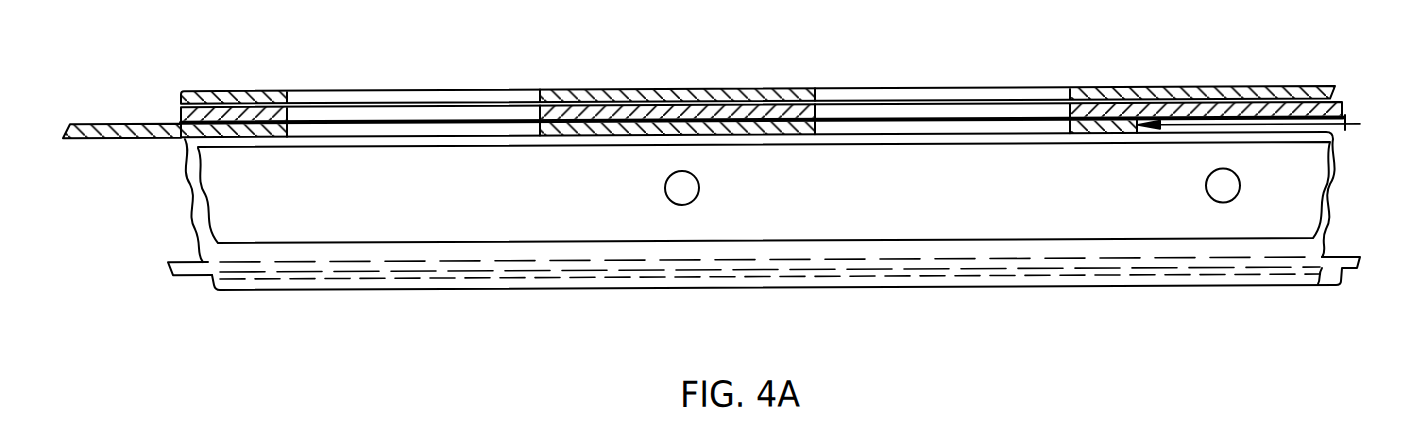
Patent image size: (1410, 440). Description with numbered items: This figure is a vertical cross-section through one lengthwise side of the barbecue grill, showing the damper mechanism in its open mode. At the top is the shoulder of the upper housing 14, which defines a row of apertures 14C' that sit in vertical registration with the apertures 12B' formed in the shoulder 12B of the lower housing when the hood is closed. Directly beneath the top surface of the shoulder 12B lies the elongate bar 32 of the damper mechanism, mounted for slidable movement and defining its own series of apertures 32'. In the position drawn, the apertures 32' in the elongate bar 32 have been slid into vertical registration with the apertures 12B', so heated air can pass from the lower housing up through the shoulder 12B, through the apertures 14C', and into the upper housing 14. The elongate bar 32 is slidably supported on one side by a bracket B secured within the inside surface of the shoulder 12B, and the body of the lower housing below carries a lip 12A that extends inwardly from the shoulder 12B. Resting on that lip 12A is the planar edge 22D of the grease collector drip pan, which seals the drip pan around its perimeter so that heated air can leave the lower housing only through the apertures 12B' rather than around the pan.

The upper housing 14 is at (243, 93).
The apertures 14C' is at (647, 62).
The shoulder 12B is at (732, 87).
The apertures 12B' is at (607, 69).
The elongate bar 32 is at (175, 156).
The apertures 32' is at (911, 152).
The lip 12A is at (360, 292).
The planar edge 22D is at (185, 263).
The bracket B is at (842, 207).